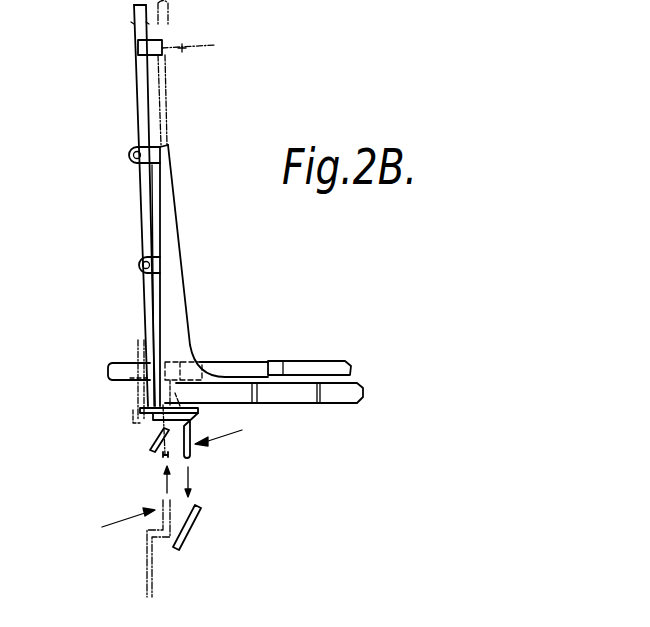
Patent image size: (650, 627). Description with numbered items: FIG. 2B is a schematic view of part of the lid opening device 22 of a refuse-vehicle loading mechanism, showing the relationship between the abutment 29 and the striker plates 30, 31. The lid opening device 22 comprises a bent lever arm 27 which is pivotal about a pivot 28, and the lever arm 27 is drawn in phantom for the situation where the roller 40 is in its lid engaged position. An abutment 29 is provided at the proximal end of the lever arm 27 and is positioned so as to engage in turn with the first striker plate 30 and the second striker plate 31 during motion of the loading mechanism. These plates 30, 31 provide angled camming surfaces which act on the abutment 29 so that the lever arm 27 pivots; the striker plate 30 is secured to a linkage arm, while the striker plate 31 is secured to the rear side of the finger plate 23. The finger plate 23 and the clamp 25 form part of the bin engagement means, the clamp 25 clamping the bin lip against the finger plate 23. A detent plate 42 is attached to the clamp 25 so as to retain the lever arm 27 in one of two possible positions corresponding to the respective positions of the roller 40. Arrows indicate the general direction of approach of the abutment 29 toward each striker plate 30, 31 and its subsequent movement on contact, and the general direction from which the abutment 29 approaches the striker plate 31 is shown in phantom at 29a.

The lid opening device 22 is at (135, 200).
The finger plate 23 is at (125, 365).
The clamp 25 is at (175, 240).
The bent lever arm 27 is at (140, 104).
The pivot 28 is at (140, 266).
The abutment 29 is at (193, 451).
The direction of approach of the abutment 29a is at (147, 540).
The first striker plate 30 is at (190, 523).
The second striker plate 31 is at (153, 440).
The roller 40 is at (140, 48).
The detent plate 42 is at (197, 417).